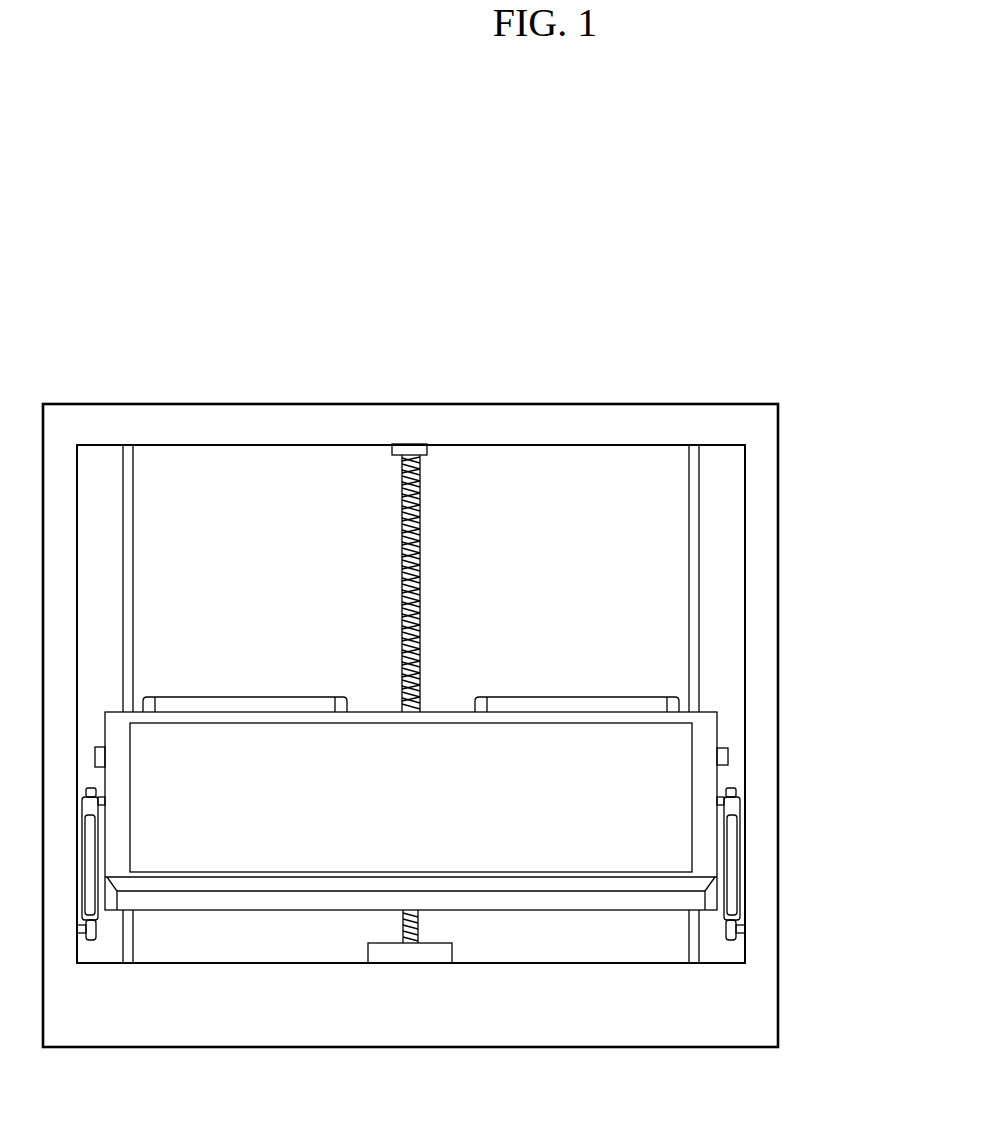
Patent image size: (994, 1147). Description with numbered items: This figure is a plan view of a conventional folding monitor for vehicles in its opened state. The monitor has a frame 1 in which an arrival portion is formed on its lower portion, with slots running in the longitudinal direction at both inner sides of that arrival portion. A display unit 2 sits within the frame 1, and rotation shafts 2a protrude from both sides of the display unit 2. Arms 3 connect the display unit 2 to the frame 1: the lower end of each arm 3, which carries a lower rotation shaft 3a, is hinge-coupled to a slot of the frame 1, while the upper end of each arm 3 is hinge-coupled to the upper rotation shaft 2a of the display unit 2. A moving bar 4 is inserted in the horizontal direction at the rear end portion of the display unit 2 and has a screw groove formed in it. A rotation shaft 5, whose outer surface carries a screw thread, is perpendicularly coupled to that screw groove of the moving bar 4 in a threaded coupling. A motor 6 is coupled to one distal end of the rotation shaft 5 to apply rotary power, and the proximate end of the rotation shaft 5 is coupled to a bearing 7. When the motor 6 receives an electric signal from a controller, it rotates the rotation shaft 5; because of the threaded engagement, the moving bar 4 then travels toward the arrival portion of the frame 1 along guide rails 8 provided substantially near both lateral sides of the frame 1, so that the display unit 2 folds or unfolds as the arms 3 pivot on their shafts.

The frame 1 is at (755, 430).
The display unit 2 is at (667, 750).
The rotation shaft 2a is at (728, 790).
The arm 3 is at (730, 863).
The lower rotation shaft 3a is at (742, 930).
The moving bar 4 is at (730, 750).
The rotation shaft 5 is at (420, 493).
The motor 6 is at (453, 957).
The bearing 7 is at (411, 450).
The guide rail 8 is at (700, 530).